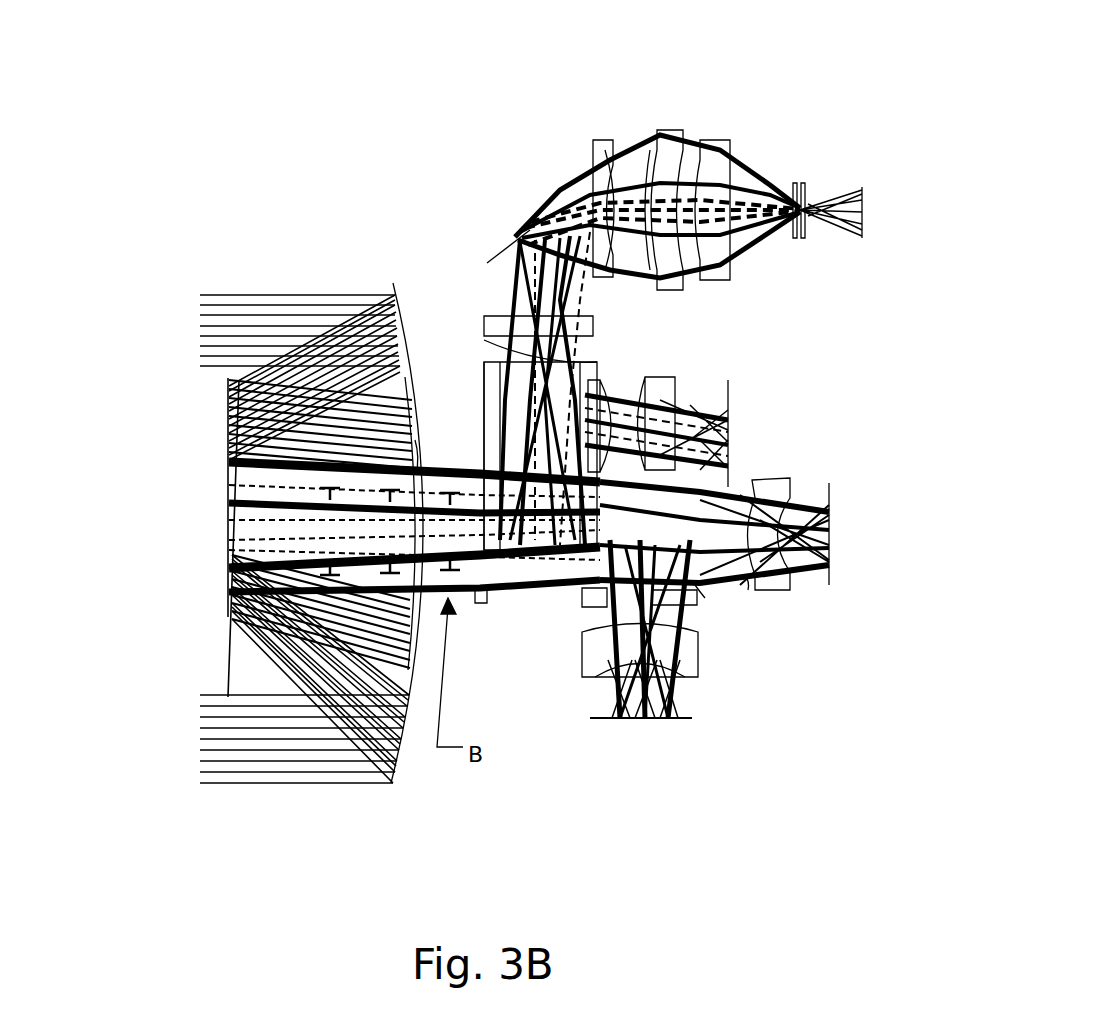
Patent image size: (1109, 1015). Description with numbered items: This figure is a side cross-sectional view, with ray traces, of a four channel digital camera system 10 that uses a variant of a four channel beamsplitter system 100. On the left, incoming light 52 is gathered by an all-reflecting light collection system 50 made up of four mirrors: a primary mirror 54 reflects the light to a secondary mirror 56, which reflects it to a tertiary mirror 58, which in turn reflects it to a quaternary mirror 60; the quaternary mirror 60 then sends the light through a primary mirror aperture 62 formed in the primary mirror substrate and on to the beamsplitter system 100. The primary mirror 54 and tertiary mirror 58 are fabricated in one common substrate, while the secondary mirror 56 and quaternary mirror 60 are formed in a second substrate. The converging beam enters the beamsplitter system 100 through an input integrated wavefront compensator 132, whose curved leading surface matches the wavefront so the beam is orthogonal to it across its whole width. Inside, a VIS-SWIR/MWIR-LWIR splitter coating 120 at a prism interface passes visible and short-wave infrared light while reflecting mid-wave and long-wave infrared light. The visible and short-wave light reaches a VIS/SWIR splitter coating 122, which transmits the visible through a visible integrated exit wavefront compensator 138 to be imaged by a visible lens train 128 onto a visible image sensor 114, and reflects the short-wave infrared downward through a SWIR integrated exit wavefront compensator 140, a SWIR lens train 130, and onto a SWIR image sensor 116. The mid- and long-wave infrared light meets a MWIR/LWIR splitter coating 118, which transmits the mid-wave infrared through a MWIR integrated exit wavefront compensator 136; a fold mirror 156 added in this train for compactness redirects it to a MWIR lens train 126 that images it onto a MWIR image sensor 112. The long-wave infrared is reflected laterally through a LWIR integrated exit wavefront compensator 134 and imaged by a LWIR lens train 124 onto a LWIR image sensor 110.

The four channel digital camera system 10 is at (798, 92).
The light collection system 50 is at (162, 634).
The light beam 52 is at (200, 315).
The primary mirror 54 is at (393, 283).
The secondary mirror 56 is at (228, 378).
The tertiary mirror 58 is at (410, 423).
The quaternary mirror 60 is at (228, 452).
The primary mirror aperture 62 is at (420, 457).
The four channel beamsplitter system 100 is at (468, 390).
The LWIR image sensor 110 is at (728, 382).
The MWIR image sensor 112 is at (863, 199).
The visible image sensor 114 is at (829, 483).
The SWIR image sensor 116 is at (685, 720).
The MWIR/LWIR splitter coating 118 is at (600, 370).
The VIS-SWIR/MWIR-LWIR splitter coating 120 is at (503, 588).
The VIS/SWIR splitter coating 122 is at (700, 590).
The LWIR lens train 124 is at (667, 378).
The MWIR lens train 126 is at (680, 122).
The visible lens train 128 is at (776, 474).
The SWIR lens train 130 is at (700, 664).
The input integrated wavefront compensator 132 is at (480, 603).
The LWIR integrated exit wavefront compensator 134 is at (600, 378).
The MWIR integrated exit wavefront compensator 136 is at (484, 360).
The visible integrated exit wavefront compensator 138 is at (745, 582).
The SWIR integrated exit wavefront compensator 140 is at (583, 632).
The fold mirror 156 is at (548, 196).